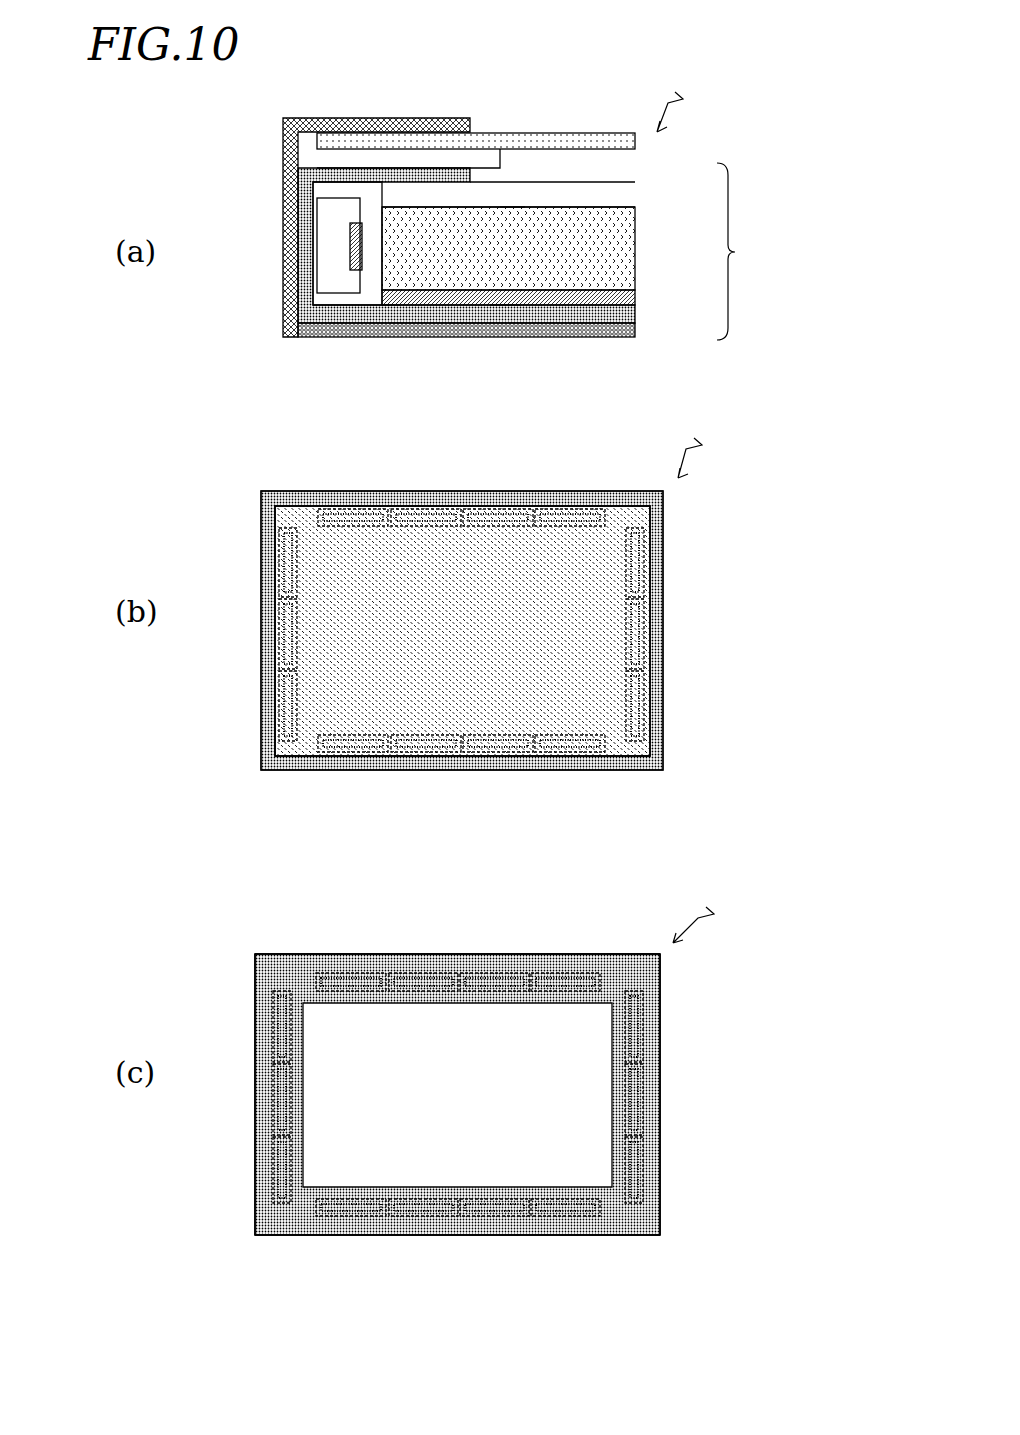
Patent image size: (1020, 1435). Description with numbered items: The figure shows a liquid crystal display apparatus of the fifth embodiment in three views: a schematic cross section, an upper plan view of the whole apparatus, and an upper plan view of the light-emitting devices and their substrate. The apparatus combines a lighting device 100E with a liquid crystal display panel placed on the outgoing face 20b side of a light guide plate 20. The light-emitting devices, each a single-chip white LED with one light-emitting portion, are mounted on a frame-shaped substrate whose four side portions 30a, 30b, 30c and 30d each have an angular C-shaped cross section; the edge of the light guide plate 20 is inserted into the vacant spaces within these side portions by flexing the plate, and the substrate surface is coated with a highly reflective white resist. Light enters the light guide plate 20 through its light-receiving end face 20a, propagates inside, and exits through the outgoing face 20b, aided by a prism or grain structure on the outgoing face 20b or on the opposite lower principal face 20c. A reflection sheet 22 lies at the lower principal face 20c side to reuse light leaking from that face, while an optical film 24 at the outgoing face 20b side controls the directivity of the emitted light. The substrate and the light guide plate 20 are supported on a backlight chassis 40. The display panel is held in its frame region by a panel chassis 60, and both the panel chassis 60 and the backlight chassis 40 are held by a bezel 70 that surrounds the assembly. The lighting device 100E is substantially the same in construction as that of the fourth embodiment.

The light guide plate 20 is at (615, 252).
The light-receiving end face 20a is at (387, 318).
The outgoing face 20b is at (512, 207).
The lower principal face 20c is at (505, 314).
The reflection sheet 22 is at (637, 297).
The optical film 24 is at (618, 197).
The side portion 30a is at (254, 1078).
The side portion 30b is at (498, 1236).
The side portion 30c is at (660, 1078).
The side portion 30d is at (447, 970).
The backlight chassis 40 is at (438, 334).
The panel chassis 60 is at (375, 158).
The bezel 70 is at (325, 118).
The lighting device 100E is at (749, 251).